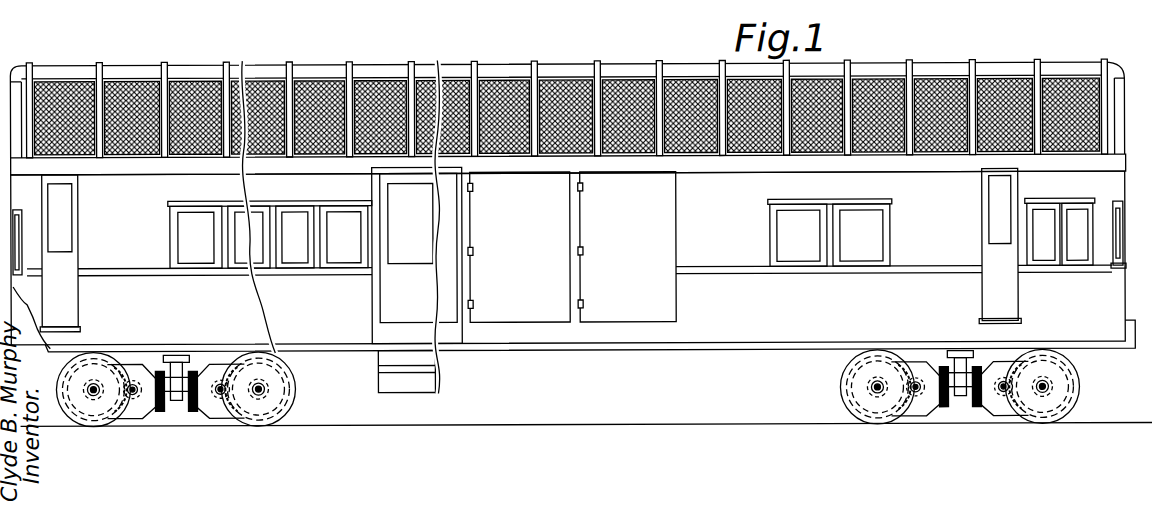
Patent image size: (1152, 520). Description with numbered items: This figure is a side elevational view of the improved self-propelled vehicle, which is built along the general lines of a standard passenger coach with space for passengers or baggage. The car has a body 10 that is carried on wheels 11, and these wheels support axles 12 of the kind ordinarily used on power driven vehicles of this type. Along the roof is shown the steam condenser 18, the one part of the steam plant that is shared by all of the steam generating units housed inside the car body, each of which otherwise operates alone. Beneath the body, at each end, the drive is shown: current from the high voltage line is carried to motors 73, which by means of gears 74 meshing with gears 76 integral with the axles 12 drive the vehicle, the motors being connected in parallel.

The body 10 is at (697, 343).
The wheels 11 is at (591, 412).
The axles 12 is at (93, 392).
The steam condenser 18 is at (573, 93).
The motors 73 is at (150, 410).
The gears 74 is at (133, 398).
The gears 76 is at (128, 396).